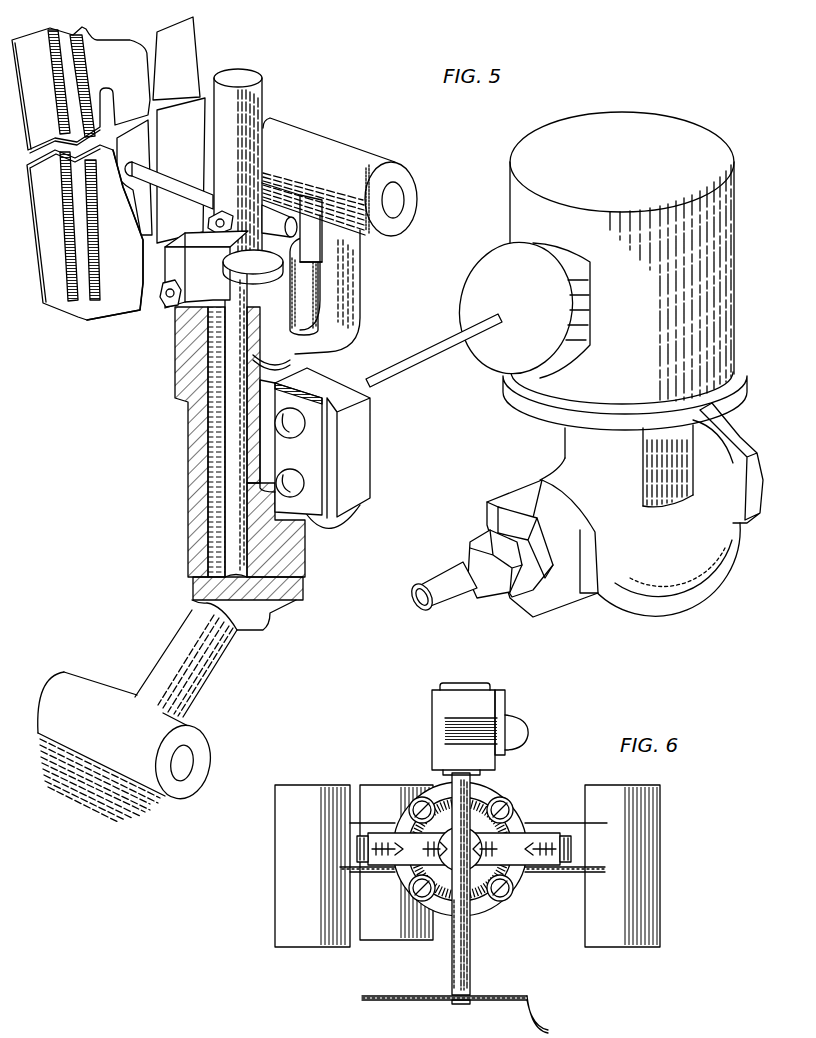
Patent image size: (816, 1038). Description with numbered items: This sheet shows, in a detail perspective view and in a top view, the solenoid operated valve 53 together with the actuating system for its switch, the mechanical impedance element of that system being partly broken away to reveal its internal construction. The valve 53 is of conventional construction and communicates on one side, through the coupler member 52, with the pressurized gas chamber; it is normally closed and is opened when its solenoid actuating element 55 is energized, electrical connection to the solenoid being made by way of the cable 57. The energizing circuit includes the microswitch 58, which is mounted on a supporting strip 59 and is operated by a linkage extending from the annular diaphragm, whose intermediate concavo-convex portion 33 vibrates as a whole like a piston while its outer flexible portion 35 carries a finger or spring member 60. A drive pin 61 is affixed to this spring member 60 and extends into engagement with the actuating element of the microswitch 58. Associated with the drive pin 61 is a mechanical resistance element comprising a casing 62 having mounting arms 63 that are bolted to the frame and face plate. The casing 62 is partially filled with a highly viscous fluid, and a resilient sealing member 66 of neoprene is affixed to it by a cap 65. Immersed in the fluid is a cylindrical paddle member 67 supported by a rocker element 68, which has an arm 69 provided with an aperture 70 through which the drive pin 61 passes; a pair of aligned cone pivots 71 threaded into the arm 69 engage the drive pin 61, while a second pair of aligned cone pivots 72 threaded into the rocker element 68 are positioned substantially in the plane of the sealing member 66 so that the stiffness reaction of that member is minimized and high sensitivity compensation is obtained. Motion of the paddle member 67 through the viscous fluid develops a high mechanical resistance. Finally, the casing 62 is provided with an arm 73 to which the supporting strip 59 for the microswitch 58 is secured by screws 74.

In FIG. 5, the intermediate concavo-convex portion 33 is at (50, 295).
In FIG. 5, the outer portion 35 is at (106, 305).
In FIG. 6, the outer portion 35 is at (548, 1027).
In FIG. 5, the coupler member 52 is at (442, 600).
In FIG. 5, the solenoid operated valve 53 is at (672, 554).
In FIG. 5, the solenoid actuating element 55 is at (672, 315).
In FIG. 5, the cable 57 is at (427, 345).
In FIG. 6, the microswitch 58 is at (440, 702).
In FIG. 5, the supporting strip 59 is at (318, 473).
In FIG. 6, the supporting strip 59 is at (506, 700).
In FIG. 5, the finger or spring member 60 is at (143, 148).
In FIG. 6, the finger or spring member 60 is at (446, 1003).
In FIG. 5, the drive pin 61 is at (156, 182).
In FIG. 6, the drive pin 61 is at (460, 962).
In FIG. 5, the casing 62 is at (192, 432).
In FIG. 5, the mounting arms 63 is at (344, 328).
In FIG. 6, the mounting arms 63 is at (370, 875).
In FIG. 5, the cap 65 is at (306, 303).
In FIG. 6, the cap 65 is at (488, 794).
In FIG. 5, the resilient sealing member 66 is at (290, 270).
In FIG. 6, the resilient sealing member 66 is at (447, 823).
In FIG. 5, the cylindrical paddle member 67 is at (235, 537).
In FIG. 5, the rocker element 68 is at (315, 212).
In FIG. 6, the rocker element 68 is at (513, 840).
In FIG. 5, the arm 69 is at (262, 95).
In FIG. 6, the arm 69 is at (455, 870).
In FIG. 5, the aperture 70 is at (276, 184).
In FIG. 5, the cone pivots 71 is at (208, 225).
In FIG. 6, the cone pivots 71 is at (462, 858).
In FIG. 5, the cone pivots 72 is at (164, 306).
In FIG. 6, the cone pivots 72 is at (383, 840).
In FIG. 5, the arm 73 is at (362, 445).
In FIG. 6, the arm 73 is at (482, 685).
In FIG. 5, the screws 74 is at (292, 476).
In FIG. 6, the screws 74 is at (525, 745).